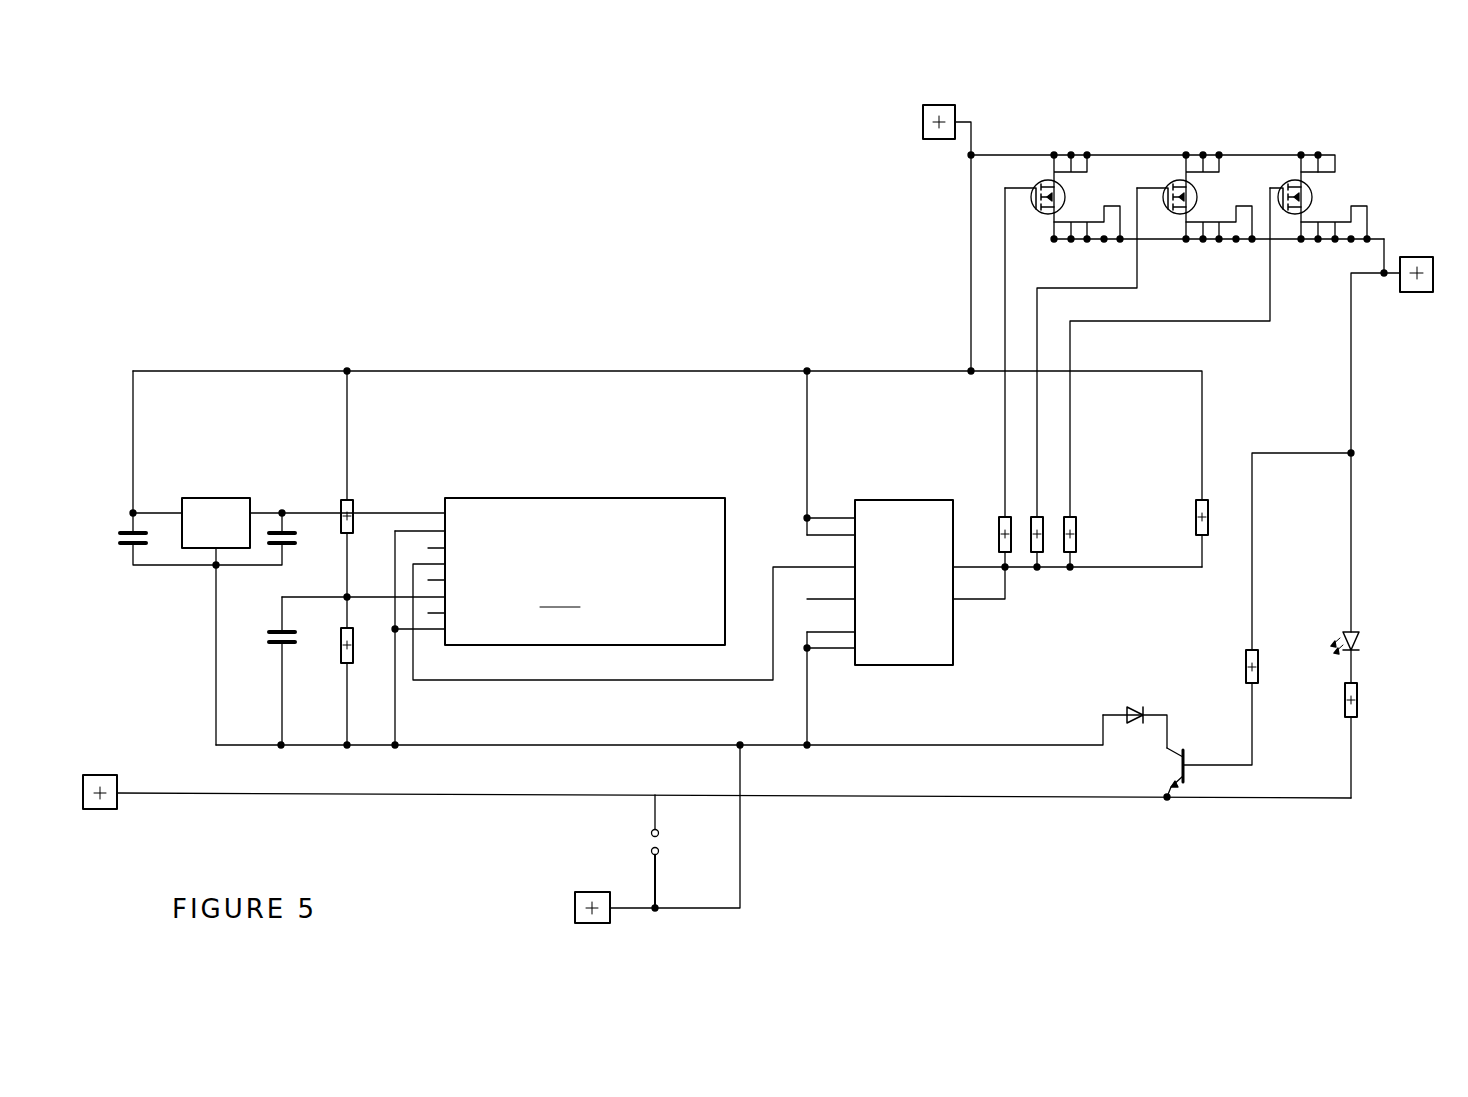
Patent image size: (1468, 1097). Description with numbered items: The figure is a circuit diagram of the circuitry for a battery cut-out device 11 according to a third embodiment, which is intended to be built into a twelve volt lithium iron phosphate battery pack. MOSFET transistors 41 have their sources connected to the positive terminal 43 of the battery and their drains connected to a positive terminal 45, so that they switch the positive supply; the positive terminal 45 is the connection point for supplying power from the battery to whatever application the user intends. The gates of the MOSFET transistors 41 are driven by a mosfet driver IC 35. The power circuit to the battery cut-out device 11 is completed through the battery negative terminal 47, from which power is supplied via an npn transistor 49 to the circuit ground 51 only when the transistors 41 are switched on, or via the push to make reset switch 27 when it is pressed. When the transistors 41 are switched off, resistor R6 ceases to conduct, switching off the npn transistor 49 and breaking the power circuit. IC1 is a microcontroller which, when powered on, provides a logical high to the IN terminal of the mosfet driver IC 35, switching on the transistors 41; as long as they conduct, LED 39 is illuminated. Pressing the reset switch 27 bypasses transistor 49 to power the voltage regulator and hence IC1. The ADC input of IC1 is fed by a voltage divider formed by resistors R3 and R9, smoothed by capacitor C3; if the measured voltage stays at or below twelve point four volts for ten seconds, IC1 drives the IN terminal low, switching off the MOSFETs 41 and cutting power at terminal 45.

The battery cut-out device 11 is at (526, 202).
The reset switch 27 is at (642, 846).
The mosfet driver IC 35 is at (926, 499).
The LED 39 is at (1378, 642).
The MOSFET transistors 41 is at (1052, 156).
The positive terminal 43 is at (923, 117).
The positive terminal 45 is at (1413, 292).
The battery negative terminal 47 is at (97, 810).
The npn transistor 49 is at (1195, 782).
The circuit ground 51 is at (853, 747).
The resistor R3 is at (340, 499).
The resistor R6 is at (1282, 627).
The resistor R9 is at (342, 667).
The capacitor C3 is at (256, 633).
The microcontroller IC1 is at (577, 497).